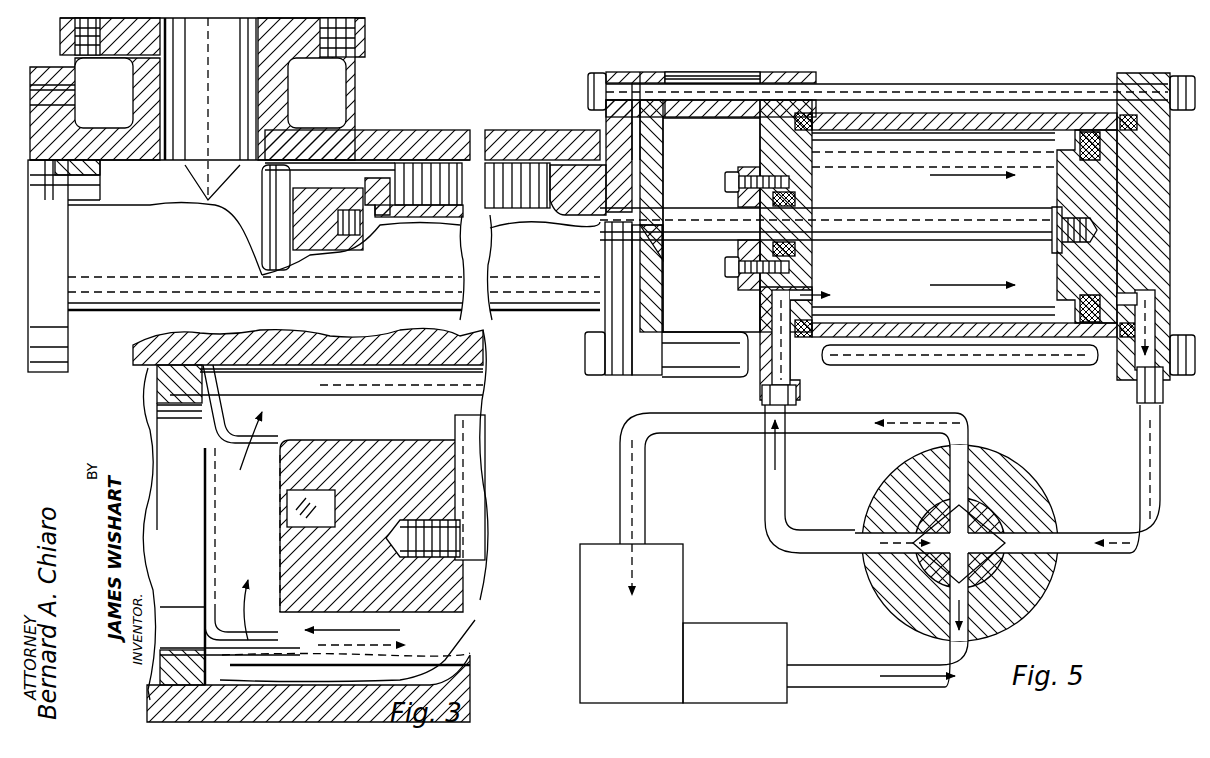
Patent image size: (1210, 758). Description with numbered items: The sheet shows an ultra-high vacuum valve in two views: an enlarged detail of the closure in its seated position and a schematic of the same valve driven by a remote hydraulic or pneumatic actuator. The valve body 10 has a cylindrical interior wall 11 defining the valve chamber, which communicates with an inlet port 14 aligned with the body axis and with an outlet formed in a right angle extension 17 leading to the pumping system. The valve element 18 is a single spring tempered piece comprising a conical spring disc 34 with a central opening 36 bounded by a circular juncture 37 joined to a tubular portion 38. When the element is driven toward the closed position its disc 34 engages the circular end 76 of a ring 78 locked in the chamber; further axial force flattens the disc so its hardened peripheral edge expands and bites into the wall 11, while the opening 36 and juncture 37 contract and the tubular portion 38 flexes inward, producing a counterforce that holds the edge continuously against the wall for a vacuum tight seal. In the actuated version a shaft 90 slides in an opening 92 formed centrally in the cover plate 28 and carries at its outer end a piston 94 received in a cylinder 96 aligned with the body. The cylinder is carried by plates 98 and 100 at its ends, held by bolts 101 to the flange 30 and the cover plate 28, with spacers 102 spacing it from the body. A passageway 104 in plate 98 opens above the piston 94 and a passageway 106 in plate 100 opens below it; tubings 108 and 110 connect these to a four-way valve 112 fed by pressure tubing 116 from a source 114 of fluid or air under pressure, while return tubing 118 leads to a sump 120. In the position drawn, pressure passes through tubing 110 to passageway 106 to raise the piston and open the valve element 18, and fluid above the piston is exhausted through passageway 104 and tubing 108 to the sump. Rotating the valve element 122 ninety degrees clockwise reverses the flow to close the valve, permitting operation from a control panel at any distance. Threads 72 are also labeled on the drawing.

In FIG. 3, the valve body 10 is at (424, 138).
In FIG. 3, the cylindrical interior wall 11 is at (445, 350).
In FIG. 3, the inlet port 14 is at (58, 117).
In FIG. 3, the right angle extension 17 is at (363, 48).
In FIG. 3, the valve element 18 is at (322, 192).
In FIG. 5, the cover plate 28 is at (648, 100).
In FIG. 3, the flange 30 is at (600, 128).
In FIG. 3, the conical spring disc 34 is at (240, 408).
In FIG. 3, the central opening 36 is at (243, 585).
In FIG. 3, the circular juncture 37 is at (245, 455).
In FIG. 3, the tubular portion 38 is at (252, 612).
In FIG. 3, the threaded portion 72 is at (506, 162).
In FIG. 3, the circular end 76 is at (202, 370).
In FIG. 3, the ring 78 is at (160, 385).
In FIG. 5, the shaft 90 is at (700, 228).
In FIG. 5, the opening 92 is at (662, 190).
In FIG. 5, the piston 94 is at (1060, 130).
In FIG. 5, the cylinder 96 is at (950, 118).
In FIG. 5, the plate 98 is at (1136, 80).
In FIG. 5, the plate 100 is at (768, 72).
In FIG. 5, the bolts 101 is at (845, 95).
In FIG. 5, the spacers 102 is at (690, 73).
In FIG. 5, the passageway 104 is at (1137, 395).
In FIG. 5, the passageway 106 is at (800, 295).
In FIG. 5, the tubing 108 is at (1140, 452).
In FIG. 5, the tubing 110 is at (782, 498).
In FIG. 5, the four-way valve 112 is at (970, 539).
In FIG. 5, the source 114 is at (785, 642).
In FIG. 5, the pressure tubing 116 is at (1090, 538).
In FIG. 5, the return tubing 118 is at (745, 434).
In FIG. 5, the sump 120 is at (680, 595).
In FIG. 5, the valve element 122 is at (990, 515).